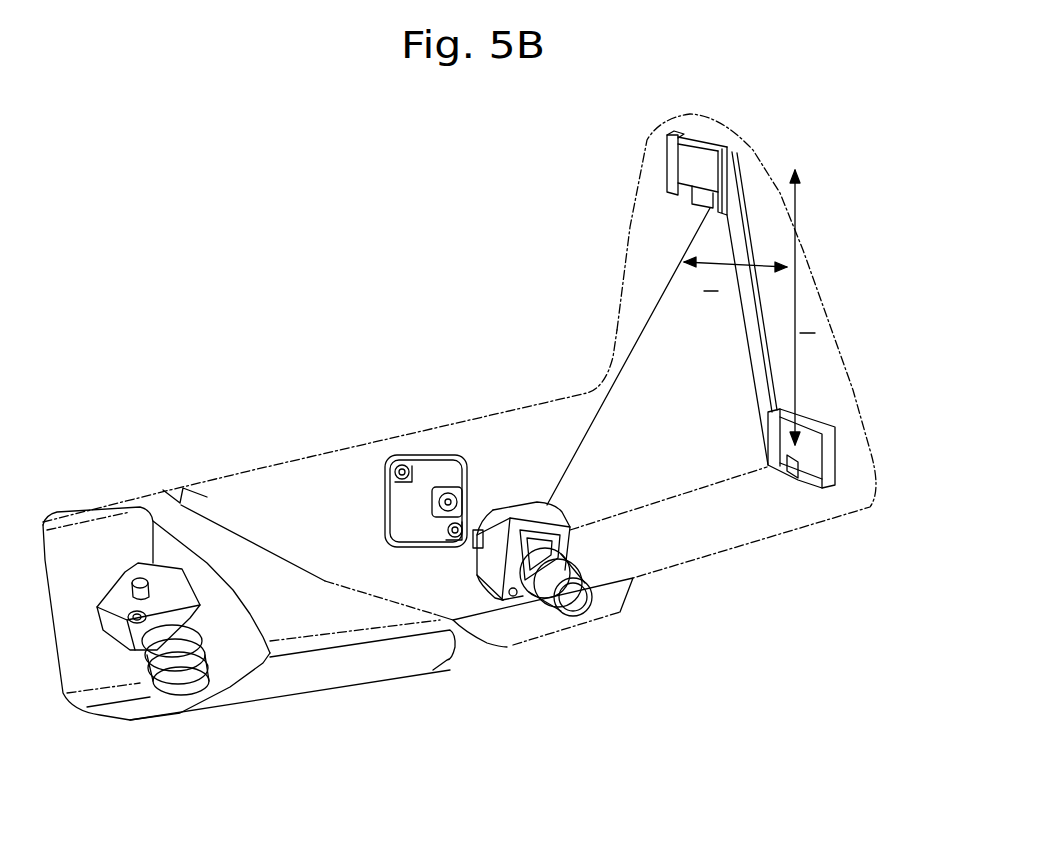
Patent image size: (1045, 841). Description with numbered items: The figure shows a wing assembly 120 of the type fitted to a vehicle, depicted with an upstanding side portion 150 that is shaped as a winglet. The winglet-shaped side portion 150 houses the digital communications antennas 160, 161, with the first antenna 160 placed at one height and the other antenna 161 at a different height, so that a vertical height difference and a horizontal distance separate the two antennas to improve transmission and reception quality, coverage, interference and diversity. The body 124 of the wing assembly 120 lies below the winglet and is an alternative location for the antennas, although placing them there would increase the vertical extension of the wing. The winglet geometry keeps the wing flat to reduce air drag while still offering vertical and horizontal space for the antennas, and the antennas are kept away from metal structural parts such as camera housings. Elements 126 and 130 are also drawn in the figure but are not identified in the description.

The wing assembly 120 is at (425, 763).
The body of the wing assembly 124 is at (487, 500).
The mounting surface 126 is at (620, 612).
The camera 130 is at (573, 603).
The upstanding side portion 150 is at (836, 292).
The first antenna 160 is at (843, 470).
The digital communications antenna 161 is at (658, 182).